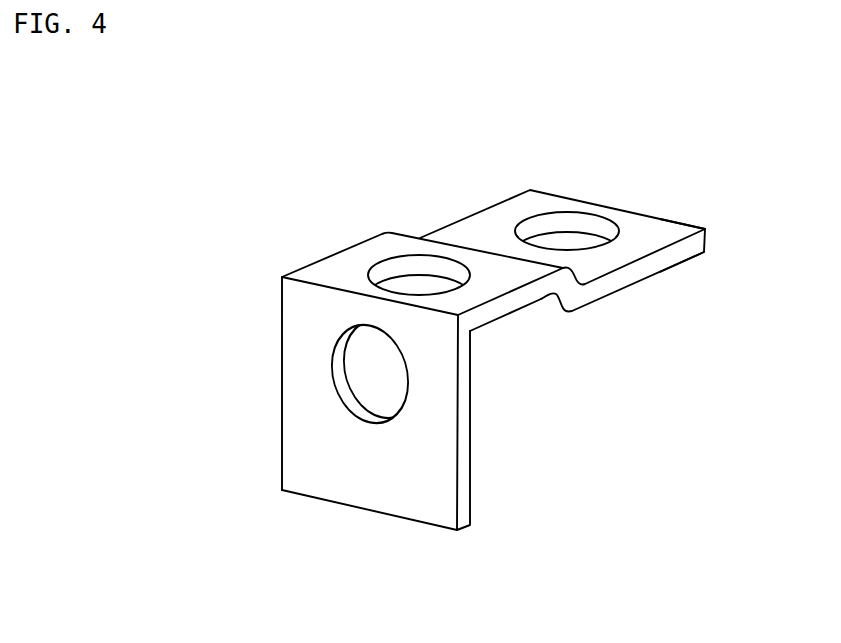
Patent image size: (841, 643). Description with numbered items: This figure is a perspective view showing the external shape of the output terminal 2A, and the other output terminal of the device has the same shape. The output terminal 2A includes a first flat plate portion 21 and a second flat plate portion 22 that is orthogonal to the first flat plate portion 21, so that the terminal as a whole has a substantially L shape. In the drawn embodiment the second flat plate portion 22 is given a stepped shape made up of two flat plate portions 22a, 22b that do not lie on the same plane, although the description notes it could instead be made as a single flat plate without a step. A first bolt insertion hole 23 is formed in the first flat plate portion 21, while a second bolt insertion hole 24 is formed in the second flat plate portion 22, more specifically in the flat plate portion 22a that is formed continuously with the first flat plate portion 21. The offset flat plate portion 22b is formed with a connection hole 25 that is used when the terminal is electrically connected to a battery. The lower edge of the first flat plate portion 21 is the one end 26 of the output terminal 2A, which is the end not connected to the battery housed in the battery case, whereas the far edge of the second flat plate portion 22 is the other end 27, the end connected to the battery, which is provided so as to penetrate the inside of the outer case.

The output terminal 2A is at (333, 173).
The first flat plate portion 21 is at (312, 453).
The second flat plate portion 22 is at (490, 103).
The second flat plate portion 22a is at (405, 241).
The second flat plate portion 22b is at (473, 233).
The first bolt insertion hole 23 is at (347, 390).
The second bolt insertion hole 24 is at (402, 268).
The connection hole 25 is at (573, 227).
The one end 26 is at (365, 513).
The other end 27 is at (672, 218).